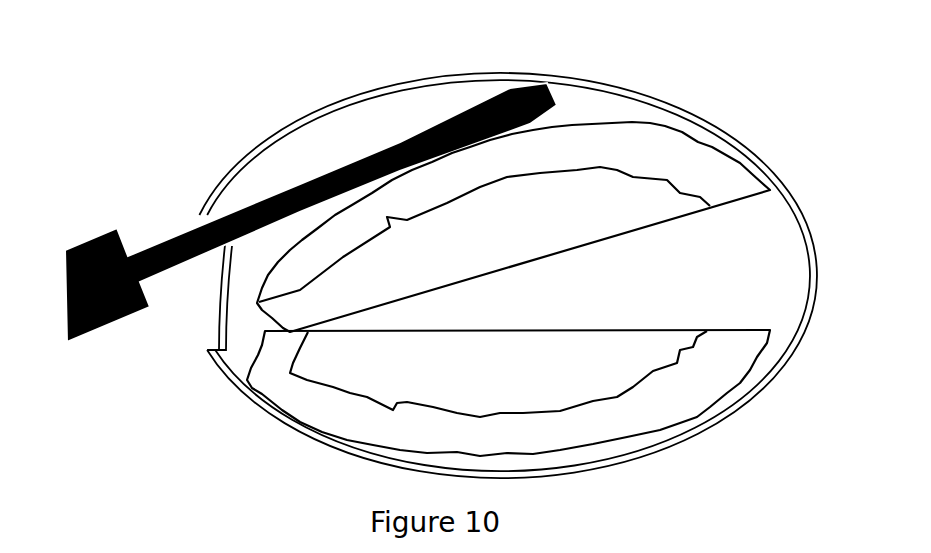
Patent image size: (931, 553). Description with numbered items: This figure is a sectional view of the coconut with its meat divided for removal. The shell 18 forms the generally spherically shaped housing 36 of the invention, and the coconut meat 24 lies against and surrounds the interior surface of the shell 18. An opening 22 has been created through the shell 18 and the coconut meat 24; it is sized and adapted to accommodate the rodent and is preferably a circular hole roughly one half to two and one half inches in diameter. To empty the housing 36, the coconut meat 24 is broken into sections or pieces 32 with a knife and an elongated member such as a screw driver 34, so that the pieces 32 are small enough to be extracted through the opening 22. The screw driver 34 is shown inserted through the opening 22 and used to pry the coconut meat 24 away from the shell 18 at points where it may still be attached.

The shell 18 is at (278, 132).
The housing 36 is at (327, 444).
The opening 22 is at (198, 325).
The screw driver 34 is at (183, 230).
The pieces 32 is at (583, 147).
The coconut meat 24 is at (697, 157).